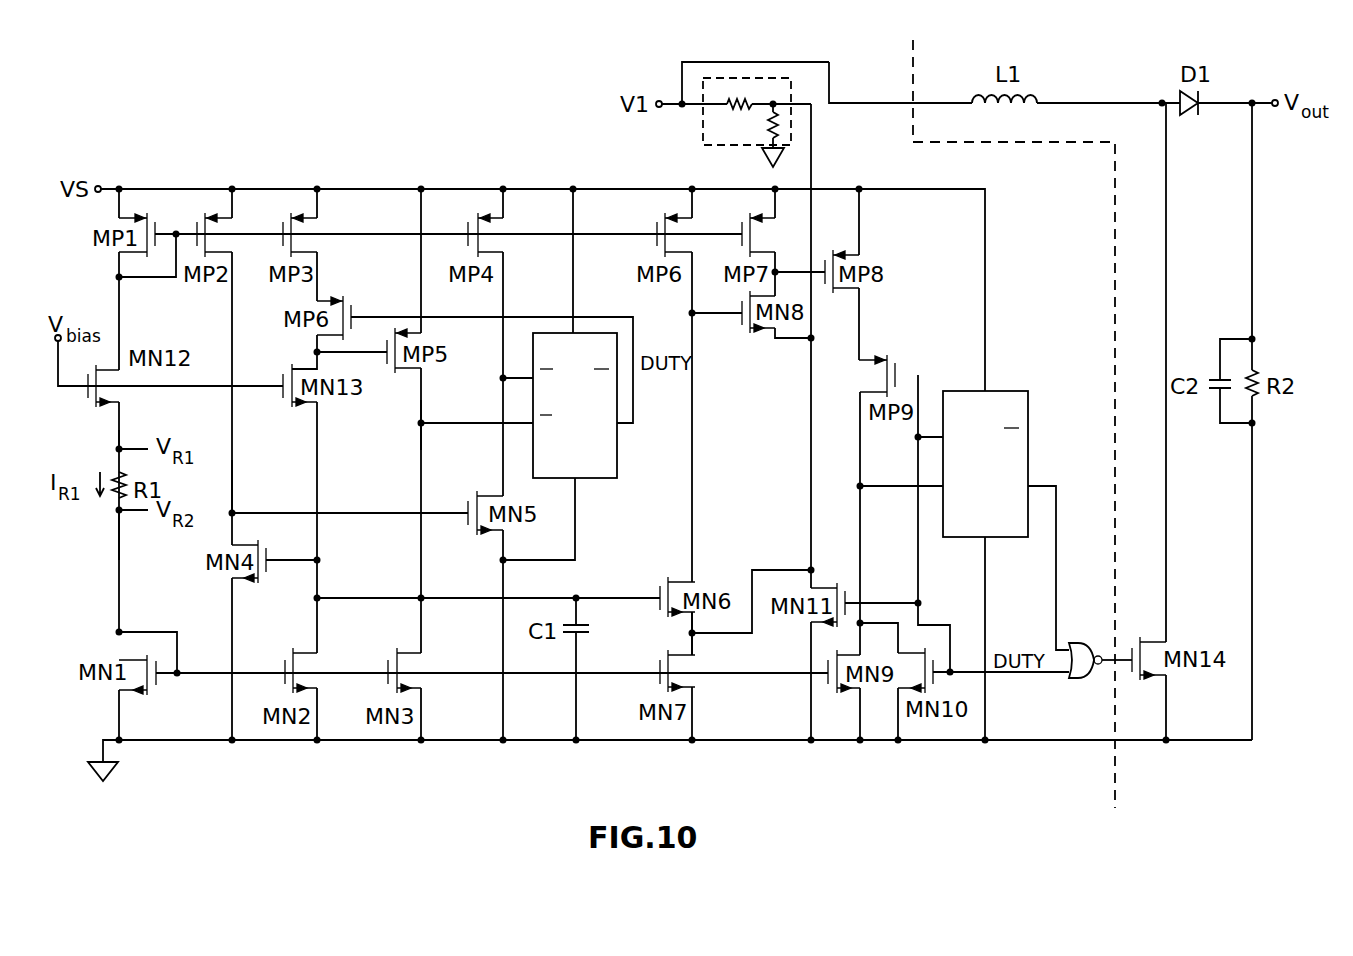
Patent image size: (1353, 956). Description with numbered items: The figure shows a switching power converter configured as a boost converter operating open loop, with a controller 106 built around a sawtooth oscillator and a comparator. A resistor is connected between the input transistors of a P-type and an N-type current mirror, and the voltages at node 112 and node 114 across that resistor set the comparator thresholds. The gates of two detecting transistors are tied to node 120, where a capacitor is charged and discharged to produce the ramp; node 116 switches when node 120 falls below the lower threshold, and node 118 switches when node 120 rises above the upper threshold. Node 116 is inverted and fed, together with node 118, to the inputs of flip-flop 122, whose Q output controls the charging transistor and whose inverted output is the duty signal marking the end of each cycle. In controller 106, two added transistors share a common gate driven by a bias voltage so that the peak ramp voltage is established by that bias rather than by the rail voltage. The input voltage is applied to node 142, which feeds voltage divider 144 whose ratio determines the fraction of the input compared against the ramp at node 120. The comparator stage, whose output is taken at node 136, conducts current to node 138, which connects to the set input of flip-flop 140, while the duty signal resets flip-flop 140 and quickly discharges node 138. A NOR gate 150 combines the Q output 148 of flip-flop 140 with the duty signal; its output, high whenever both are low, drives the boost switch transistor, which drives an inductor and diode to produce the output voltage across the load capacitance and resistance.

The controller 106 is at (386, 113).
The node 112 is at (123, 437).
The node 114 is at (123, 543).
The node 116 is at (234, 492).
The node 118 is at (421, 423).
The node 120 is at (320, 597).
The RS-bar flip-flop 122 is at (603, 479).
The comparator output node 136 is at (692, 634).
The node 138 is at (861, 428).
The flip-flop 140 is at (1000, 392).
The node 142 is at (661, 100).
The voltage divider 144 is at (702, 131).
The Q output 148 is at (1056, 612).
The NOR gate 150 is at (1088, 683).